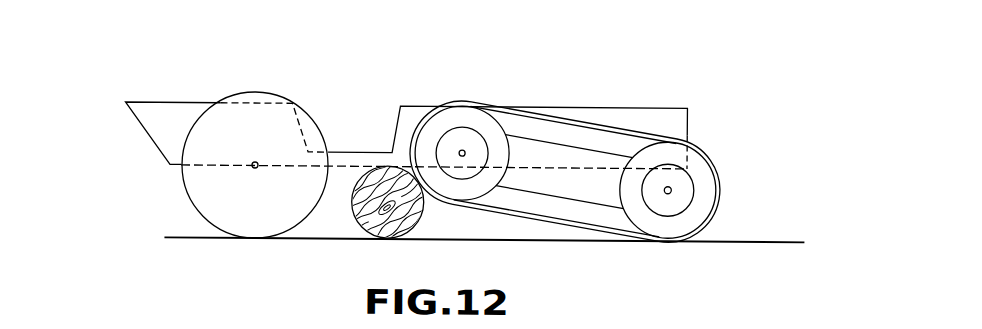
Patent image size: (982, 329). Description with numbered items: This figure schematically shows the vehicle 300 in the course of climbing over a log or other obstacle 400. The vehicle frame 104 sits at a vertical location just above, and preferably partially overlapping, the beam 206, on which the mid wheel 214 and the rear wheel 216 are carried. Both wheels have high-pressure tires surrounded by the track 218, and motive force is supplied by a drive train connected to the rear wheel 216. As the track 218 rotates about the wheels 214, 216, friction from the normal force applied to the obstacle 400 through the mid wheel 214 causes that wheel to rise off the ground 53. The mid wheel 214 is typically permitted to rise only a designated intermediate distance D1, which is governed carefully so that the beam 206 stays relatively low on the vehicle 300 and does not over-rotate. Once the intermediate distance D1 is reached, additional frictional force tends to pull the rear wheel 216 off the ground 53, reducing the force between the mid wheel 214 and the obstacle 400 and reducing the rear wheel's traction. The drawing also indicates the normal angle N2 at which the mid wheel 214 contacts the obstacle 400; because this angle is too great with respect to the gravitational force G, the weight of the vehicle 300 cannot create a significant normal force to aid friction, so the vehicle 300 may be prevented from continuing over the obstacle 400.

The ground 53 is at (757, 239).
The vehicle frame 104 is at (154, 143).
The beam 206 is at (566, 143).
The mid wheel 214 is at (508, 186).
The rear wheel 216 is at (668, 225).
The track 218 is at (633, 127).
The vehicle 300 is at (170, 266).
The obstacle 400 is at (376, 235).
The normal angle N2 is at (420, 180).
The intermediate distance D1 is at (458, 204).
The gravitational force G is at (790, 211).